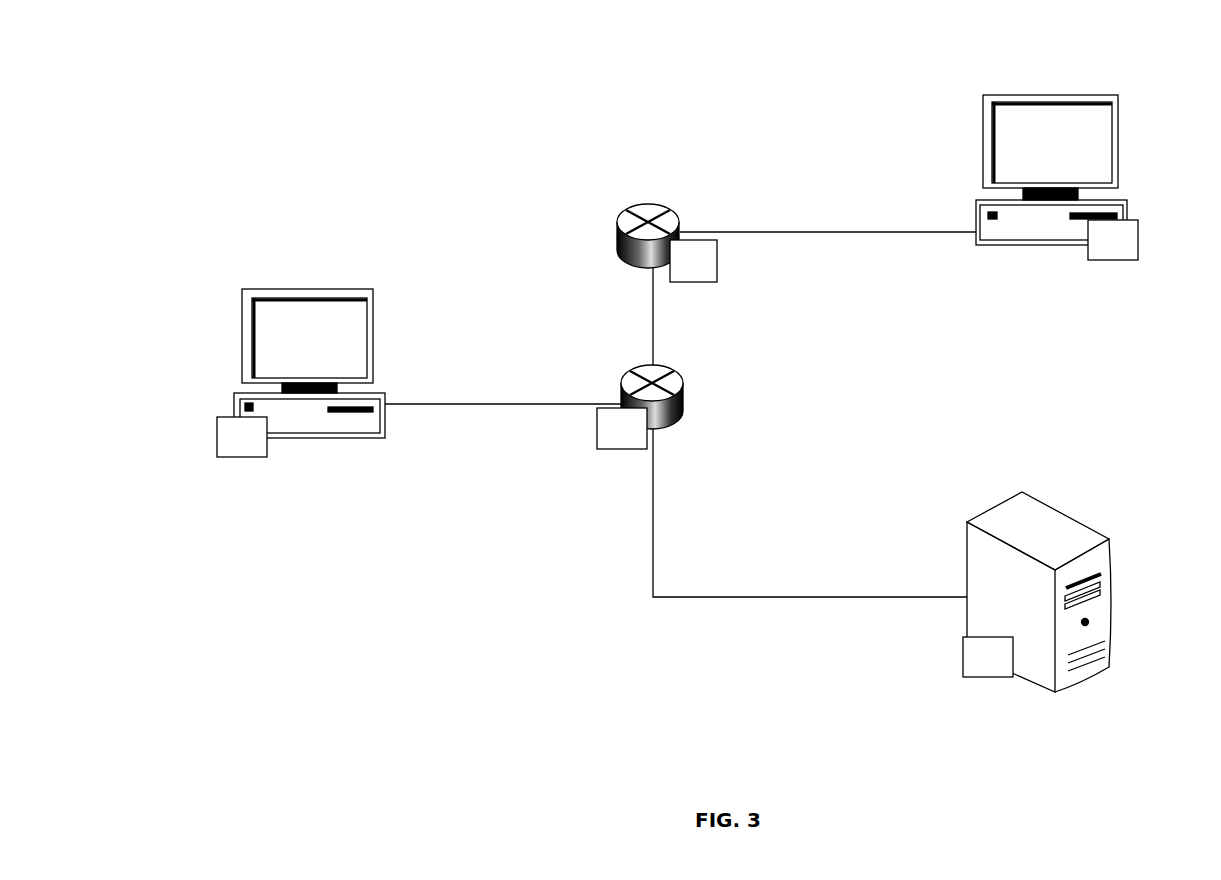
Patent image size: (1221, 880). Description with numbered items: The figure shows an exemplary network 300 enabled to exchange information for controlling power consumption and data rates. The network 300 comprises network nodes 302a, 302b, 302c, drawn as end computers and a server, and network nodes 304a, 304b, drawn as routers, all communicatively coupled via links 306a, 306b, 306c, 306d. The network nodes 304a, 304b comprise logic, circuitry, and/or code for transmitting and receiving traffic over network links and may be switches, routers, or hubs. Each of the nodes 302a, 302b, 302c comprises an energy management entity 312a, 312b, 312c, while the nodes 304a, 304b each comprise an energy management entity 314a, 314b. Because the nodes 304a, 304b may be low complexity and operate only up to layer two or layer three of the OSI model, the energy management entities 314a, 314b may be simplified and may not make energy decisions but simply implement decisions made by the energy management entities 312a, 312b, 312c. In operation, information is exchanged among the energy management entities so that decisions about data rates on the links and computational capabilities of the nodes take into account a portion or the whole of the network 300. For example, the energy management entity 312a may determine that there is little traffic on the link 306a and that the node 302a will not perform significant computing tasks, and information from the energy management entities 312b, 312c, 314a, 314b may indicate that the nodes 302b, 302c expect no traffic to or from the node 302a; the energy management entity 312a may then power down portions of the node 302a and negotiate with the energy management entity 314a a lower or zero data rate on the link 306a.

The network 300 is at (222, 92).
The network node 302a is at (242, 292).
The network node 302b is at (1118, 95).
The network node 302c is at (1022, 492).
The network node 304a is at (684, 401).
The network node 304b is at (620, 246).
The link 306a is at (478, 404).
The link 306b is at (833, 232).
The link 306c is at (788, 597).
The link 306d is at (654, 320).
The energy management entity 312a is at (217, 435).
The energy management entity 312b is at (1138, 235).
The energy management entity 312c is at (963, 657).
The energy management entity 314a is at (597, 438).
The energy management entity 314b is at (717, 258).